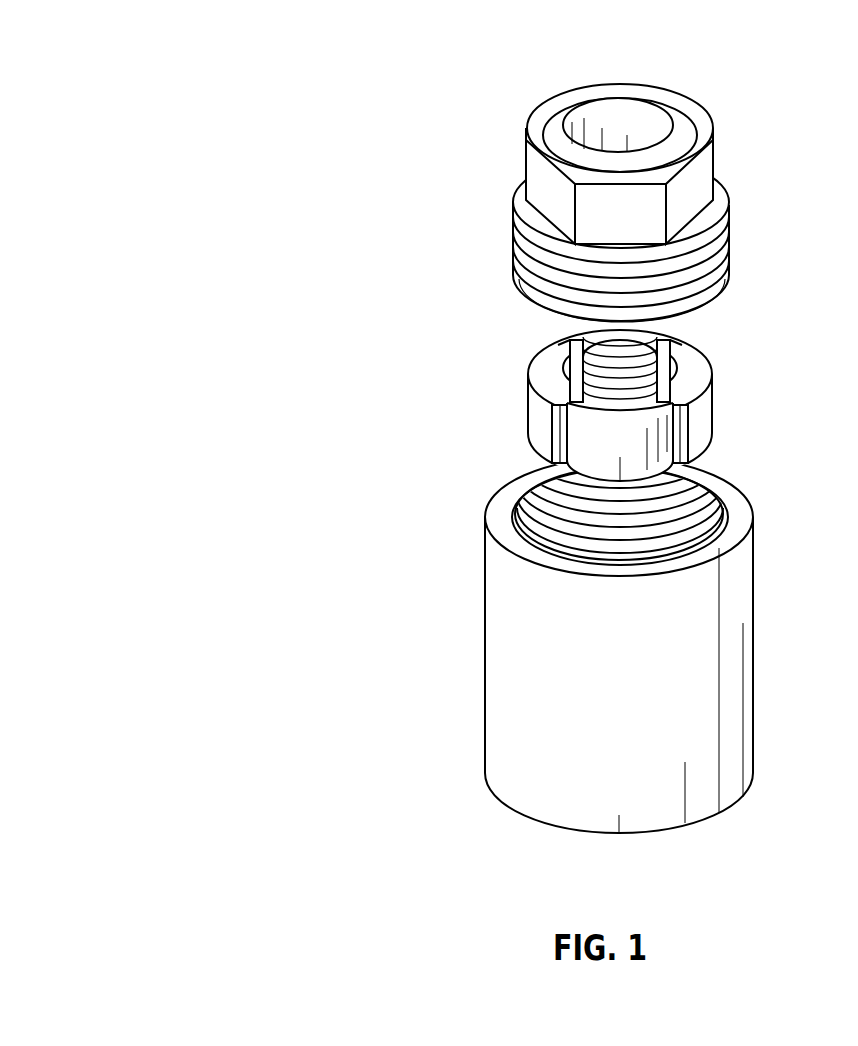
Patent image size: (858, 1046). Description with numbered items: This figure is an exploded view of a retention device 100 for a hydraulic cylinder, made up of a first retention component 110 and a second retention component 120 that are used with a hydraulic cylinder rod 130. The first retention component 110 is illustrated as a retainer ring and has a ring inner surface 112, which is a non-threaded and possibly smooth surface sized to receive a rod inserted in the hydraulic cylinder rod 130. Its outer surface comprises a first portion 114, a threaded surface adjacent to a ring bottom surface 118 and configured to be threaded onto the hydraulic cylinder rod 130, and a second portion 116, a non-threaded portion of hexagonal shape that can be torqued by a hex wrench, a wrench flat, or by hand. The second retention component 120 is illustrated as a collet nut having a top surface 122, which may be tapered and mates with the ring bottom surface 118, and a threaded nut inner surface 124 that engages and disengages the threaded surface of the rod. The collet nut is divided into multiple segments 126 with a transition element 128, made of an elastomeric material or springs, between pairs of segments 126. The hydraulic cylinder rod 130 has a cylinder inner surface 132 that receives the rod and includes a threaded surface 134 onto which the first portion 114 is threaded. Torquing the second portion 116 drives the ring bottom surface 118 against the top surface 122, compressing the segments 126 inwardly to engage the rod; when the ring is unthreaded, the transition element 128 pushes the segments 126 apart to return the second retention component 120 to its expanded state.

The retention device 100 is at (116, 67).
The first retention component 110 is at (488, 172).
The ring inner surface 112 is at (645, 120).
The first portion 114 is at (717, 247).
The second portion 116 is at (700, 185).
The ring bottom surface 118 is at (700, 293).
The second retention component 120 is at (503, 439).
The top surface 122 is at (545, 382).
The nut inner surface 124 is at (712, 358).
The segments 126 is at (660, 433).
The transition element 128 is at (568, 338).
The hydraulic cylinder rod 130 is at (483, 746).
The cylinder inner surface 132 is at (562, 547).
The threaded surface 134 is at (700, 510).